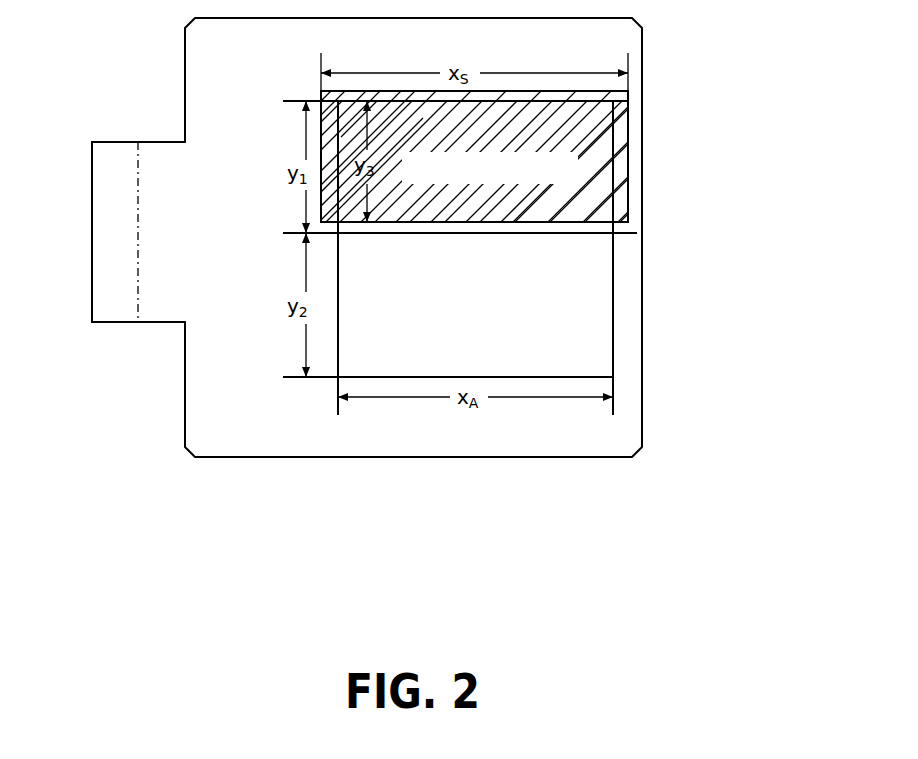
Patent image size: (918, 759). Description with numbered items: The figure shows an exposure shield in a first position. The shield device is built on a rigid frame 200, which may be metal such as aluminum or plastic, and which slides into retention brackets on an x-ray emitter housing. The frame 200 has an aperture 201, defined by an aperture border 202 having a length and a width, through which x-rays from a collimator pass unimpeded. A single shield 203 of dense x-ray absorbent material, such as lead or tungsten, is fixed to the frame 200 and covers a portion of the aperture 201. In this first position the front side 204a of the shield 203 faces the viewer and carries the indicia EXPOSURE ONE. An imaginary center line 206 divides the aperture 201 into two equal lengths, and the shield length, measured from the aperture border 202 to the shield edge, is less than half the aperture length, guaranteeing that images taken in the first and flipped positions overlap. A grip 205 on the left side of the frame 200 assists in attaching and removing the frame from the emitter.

The frame 200 is at (642, 53).
The aperture 201 is at (562, 327).
The aperture border 202 is at (535, 378).
The shield 203 is at (629, 103).
The side of shield 204a is at (597, 148).
The grip 205 is at (120, 141).
The center line 206 is at (542, 234).